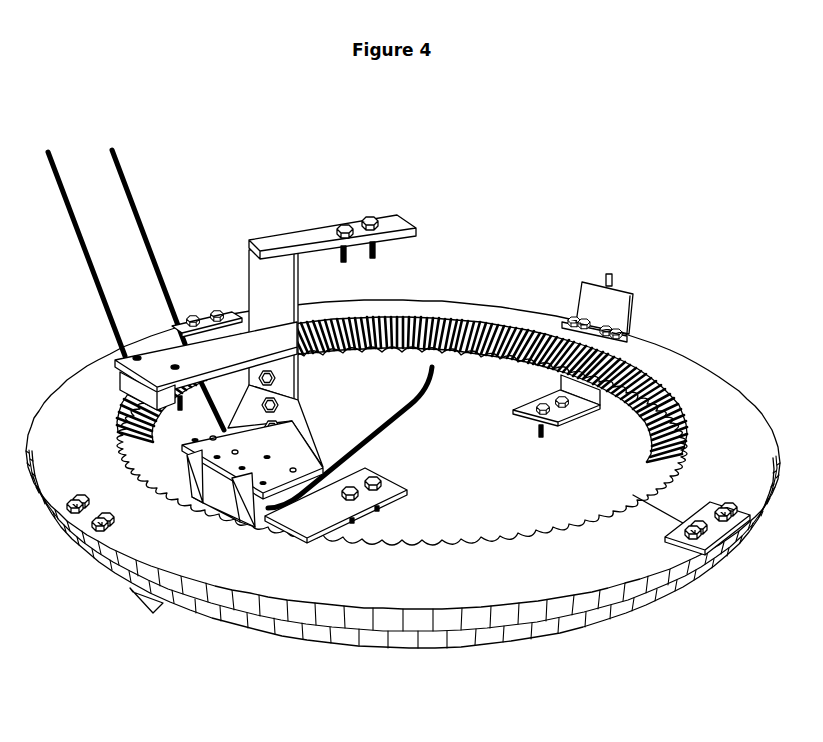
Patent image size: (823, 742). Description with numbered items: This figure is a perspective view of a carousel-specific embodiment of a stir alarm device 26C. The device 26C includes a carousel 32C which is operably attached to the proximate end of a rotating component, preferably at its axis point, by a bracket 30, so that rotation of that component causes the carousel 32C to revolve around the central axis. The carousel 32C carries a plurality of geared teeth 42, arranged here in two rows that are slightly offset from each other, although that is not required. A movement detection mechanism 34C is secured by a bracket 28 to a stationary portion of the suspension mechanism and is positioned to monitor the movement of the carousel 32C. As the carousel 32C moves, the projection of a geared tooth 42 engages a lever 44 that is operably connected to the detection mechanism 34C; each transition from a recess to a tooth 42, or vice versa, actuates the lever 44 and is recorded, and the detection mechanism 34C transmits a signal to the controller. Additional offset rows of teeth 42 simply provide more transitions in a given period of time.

The stir alarm device 26C is at (290, 132).
The bracket 28 is at (393, 223).
The bracket 30 is at (388, 490).
The carousel 32C is at (702, 383).
The detection mechanism 34C is at (140, 430).
The geared teeth 42 is at (420, 316).
The lever 44 is at (167, 485).